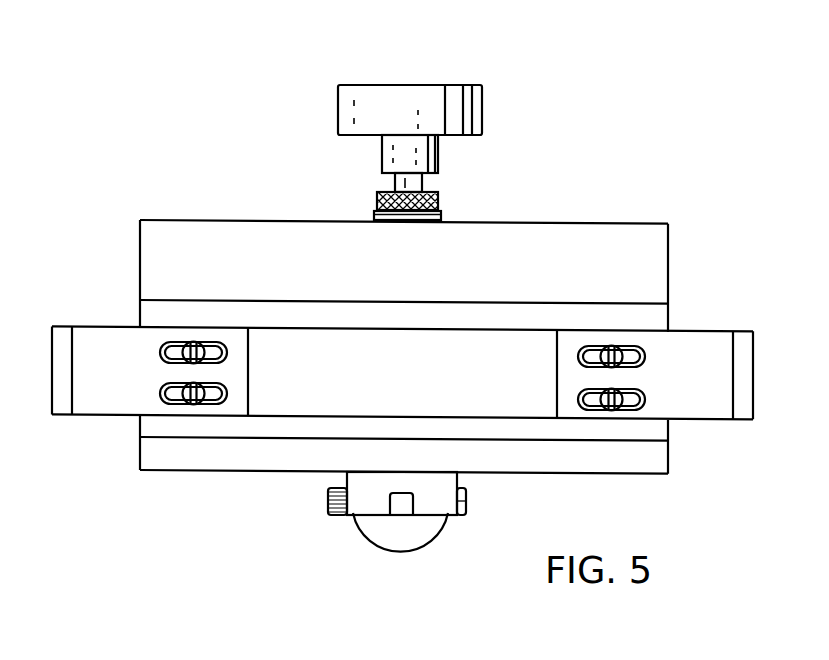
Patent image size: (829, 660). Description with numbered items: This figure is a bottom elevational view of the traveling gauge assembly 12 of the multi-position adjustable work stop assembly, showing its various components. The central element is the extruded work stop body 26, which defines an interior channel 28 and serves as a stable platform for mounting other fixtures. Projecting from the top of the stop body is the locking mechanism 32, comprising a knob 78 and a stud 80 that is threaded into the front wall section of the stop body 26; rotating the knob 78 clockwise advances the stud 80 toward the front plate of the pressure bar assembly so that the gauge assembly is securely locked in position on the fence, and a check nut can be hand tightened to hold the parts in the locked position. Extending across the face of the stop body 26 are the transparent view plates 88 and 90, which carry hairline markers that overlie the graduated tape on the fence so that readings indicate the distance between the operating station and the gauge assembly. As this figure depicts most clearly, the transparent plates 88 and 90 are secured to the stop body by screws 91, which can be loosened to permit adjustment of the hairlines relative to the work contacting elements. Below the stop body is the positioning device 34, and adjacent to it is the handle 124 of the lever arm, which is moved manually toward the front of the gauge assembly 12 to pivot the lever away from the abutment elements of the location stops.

The traveling gauge assembly 12 is at (240, 212).
The work stop body 26 is at (673, 256).
The interior channel 28 is at (269, 426).
The locking mechanism 32 is at (440, 156).
The positioning device 34 is at (444, 501).
The knob 78 is at (478, 112).
The stud 80 is at (396, 182).
The transparent view plate 88 is at (626, 347).
The transparent view plate 90 is at (101, 330).
The screws 91 is at (612, 394).
The handle 124 is at (381, 534).